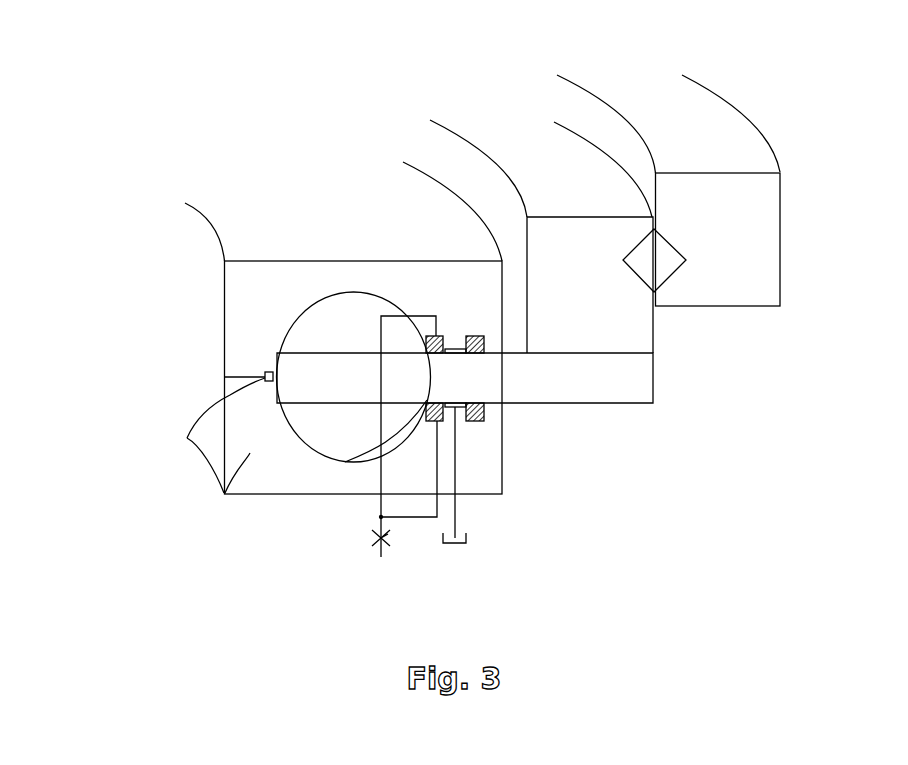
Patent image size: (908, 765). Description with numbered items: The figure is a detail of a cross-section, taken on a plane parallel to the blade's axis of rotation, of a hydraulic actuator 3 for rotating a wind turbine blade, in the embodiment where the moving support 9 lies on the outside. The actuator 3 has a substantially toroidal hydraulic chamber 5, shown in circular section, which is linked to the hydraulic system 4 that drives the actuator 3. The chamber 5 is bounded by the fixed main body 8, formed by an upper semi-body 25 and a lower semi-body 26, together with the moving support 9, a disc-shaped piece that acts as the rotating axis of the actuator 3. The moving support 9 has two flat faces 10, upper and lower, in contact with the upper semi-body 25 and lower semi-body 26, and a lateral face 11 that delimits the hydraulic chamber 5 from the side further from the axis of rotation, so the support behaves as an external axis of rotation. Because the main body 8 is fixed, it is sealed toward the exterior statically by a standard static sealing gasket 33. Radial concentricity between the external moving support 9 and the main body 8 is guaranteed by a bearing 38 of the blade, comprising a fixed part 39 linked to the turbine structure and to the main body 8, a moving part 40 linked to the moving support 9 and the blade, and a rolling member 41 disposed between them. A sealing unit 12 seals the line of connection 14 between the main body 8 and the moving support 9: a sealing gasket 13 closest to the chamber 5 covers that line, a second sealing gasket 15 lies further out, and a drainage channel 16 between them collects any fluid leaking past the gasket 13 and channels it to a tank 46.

The hydraulic actuator 3 is at (210, 146).
The upper semi-body 25 is at (240, 307).
The hydraulic chamber 5 is at (337, 328).
The line of connection 14 is at (310, 404).
The main body 8 is at (175, 367).
The static sealing gasket 33 is at (187, 438).
The lower semi-body 26 is at (224, 494).
The lateral face 11 is at (345, 462).
The sealing gasket 13 is at (432, 336).
The drainage channel 16 is at (425, 336).
The second sealing gasket 15 is at (475, 336).
The tank 46 is at (443, 543).
The hydraulic system 4 is at (381, 548).
The sealing unit 12 is at (468, 447).
The moving support 9 is at (576, 456).
The flat faces 10 is at (590, 352).
The moving part 40 is at (577, 240).
The fixed part 39 is at (767, 221).
The rolling member 41 is at (654, 293).
The bearing 38 is at (730, 363).